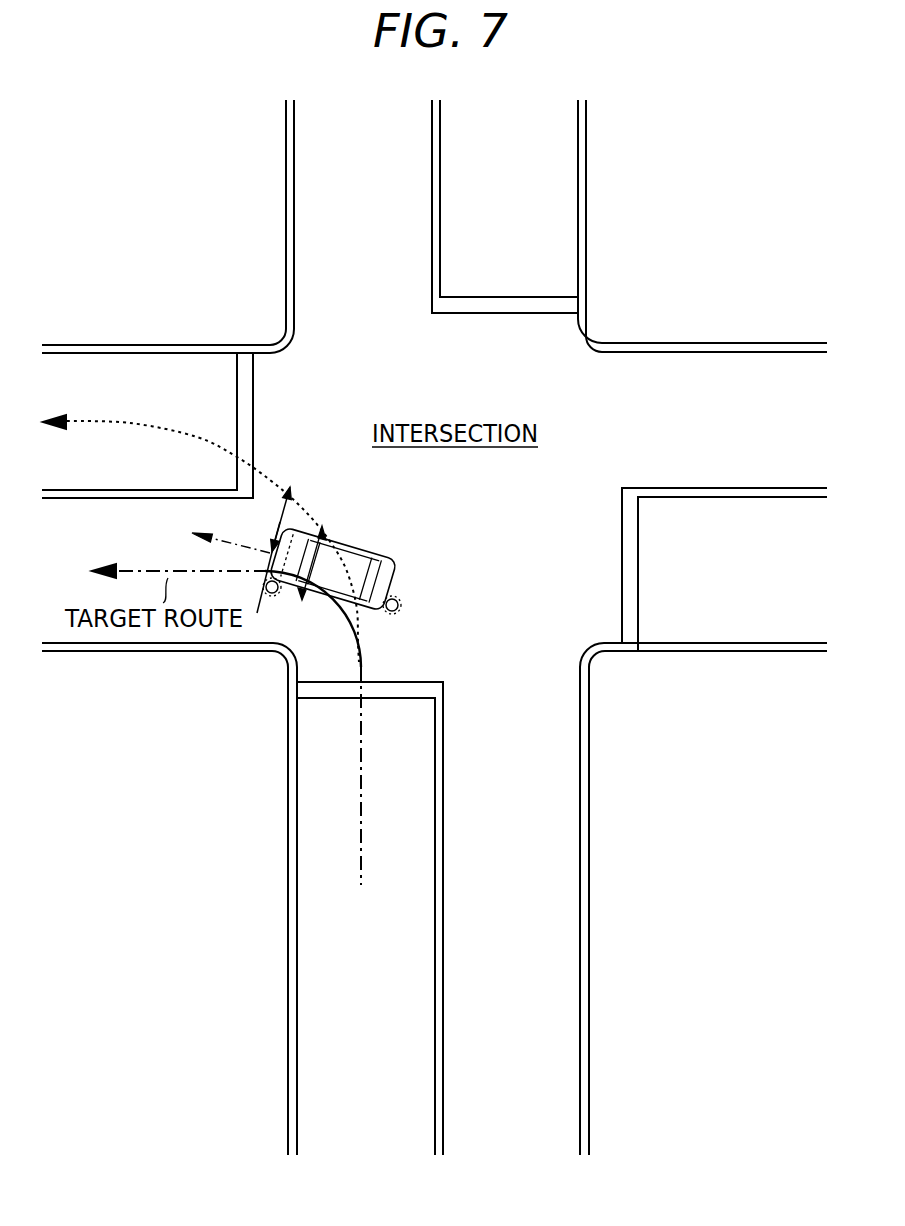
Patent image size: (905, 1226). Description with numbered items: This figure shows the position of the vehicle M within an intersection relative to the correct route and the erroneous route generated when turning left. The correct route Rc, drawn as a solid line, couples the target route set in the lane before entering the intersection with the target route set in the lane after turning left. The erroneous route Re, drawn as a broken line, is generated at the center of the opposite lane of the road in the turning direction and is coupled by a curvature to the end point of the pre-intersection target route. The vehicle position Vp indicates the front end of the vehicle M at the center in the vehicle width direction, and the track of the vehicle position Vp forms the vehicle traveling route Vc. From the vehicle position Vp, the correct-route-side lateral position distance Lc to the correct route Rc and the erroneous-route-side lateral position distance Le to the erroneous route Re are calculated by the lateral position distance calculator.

The vehicle M is at (400, 573).
The erroneous route Re is at (276, 468).
The correct route Rc is at (350, 640).
The erroneous-route-side lateral position distance Le is at (291, 500).
The correct-route-side lateral position distance Lc is at (259, 609).
The vehicle position Vp is at (264, 542).
The vehicle traveling route Vc is at (212, 549).